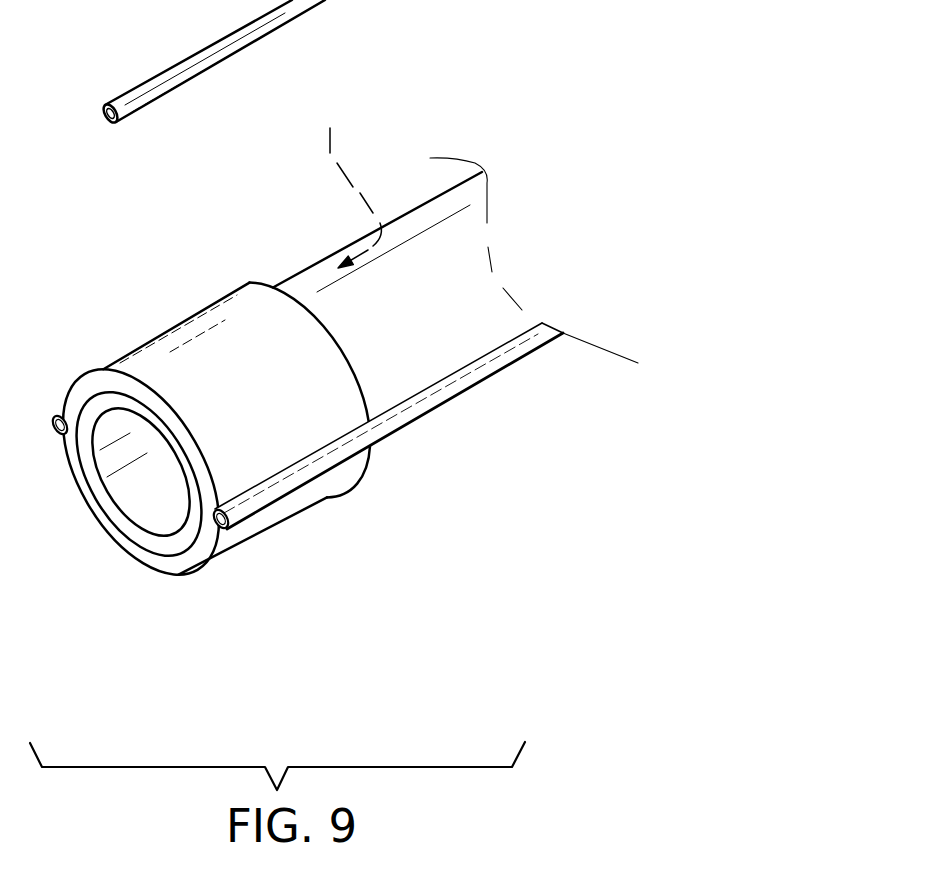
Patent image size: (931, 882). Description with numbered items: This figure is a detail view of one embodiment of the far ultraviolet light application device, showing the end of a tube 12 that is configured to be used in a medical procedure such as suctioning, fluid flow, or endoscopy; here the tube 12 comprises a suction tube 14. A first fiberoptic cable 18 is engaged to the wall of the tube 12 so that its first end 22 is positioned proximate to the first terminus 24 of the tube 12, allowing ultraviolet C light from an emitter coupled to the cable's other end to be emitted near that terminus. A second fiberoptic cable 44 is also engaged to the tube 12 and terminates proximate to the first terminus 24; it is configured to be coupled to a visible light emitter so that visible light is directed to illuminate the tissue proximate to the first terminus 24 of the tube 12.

The tube 12 is at (292, 378).
The suction tube 14 is at (247, 410).
The first fiberoptic cable 18 is at (237, 55).
The first end 22 is at (223, 530).
The first terminus 24 is at (178, 562).
The second fiberoptic cable 44 is at (437, 398).